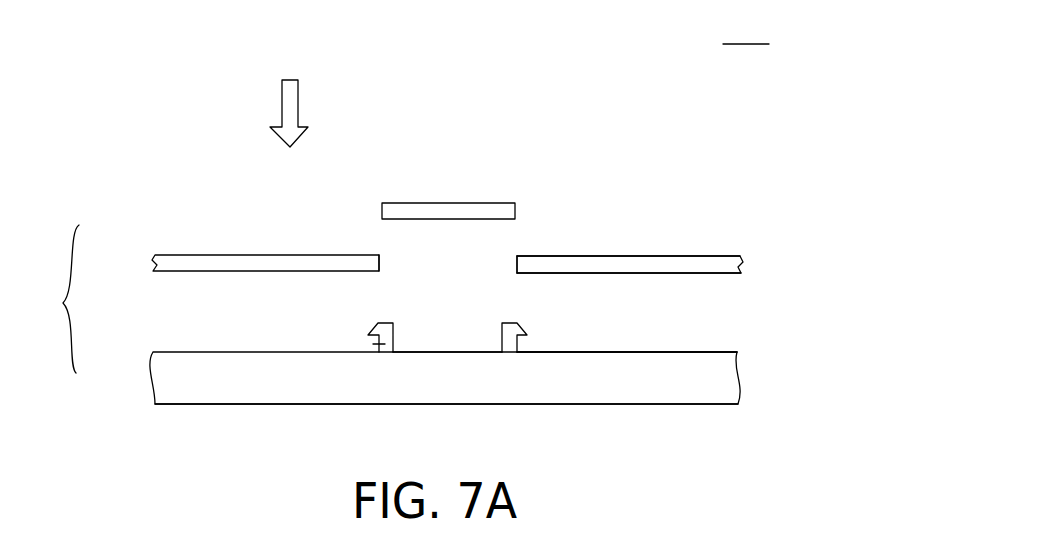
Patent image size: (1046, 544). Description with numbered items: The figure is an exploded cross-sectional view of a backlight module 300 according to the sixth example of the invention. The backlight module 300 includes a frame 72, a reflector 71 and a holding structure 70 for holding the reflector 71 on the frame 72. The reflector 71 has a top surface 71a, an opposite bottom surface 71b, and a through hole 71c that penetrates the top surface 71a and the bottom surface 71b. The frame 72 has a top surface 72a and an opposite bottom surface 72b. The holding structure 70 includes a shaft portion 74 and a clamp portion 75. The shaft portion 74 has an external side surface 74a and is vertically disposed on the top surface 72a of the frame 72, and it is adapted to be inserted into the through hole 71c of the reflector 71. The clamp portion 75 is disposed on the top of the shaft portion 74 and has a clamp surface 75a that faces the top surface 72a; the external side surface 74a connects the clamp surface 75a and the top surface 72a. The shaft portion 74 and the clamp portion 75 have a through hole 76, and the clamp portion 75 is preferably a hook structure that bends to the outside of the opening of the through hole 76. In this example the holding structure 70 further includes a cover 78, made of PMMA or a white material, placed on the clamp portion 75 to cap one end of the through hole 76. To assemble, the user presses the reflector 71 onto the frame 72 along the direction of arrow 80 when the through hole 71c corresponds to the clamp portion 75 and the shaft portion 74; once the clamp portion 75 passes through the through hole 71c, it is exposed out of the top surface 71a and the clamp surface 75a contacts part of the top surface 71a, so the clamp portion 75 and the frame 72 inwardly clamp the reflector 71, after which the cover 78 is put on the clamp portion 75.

The backlight module 300 is at (746, 31).
The arrow 80 is at (290, 80).
The holding structure 70 is at (58, 299).
The cover 78 is at (403, 212).
The reflector 71 is at (740, 266).
The top surface 71a is at (700, 257).
The bottom surface 71b is at (705, 273).
The through hole 71c is at (471, 266).
The frame 72 is at (728, 382).
The top surface 72a is at (713, 352).
The bottom surface 72b is at (697, 405).
The shaft portion 74 is at (380, 344).
The external side surface 74a is at (537, 353).
The clamp portion 75 is at (368, 334).
The clamp surface 75a is at (527, 337).
The through hole 76 is at (456, 340).